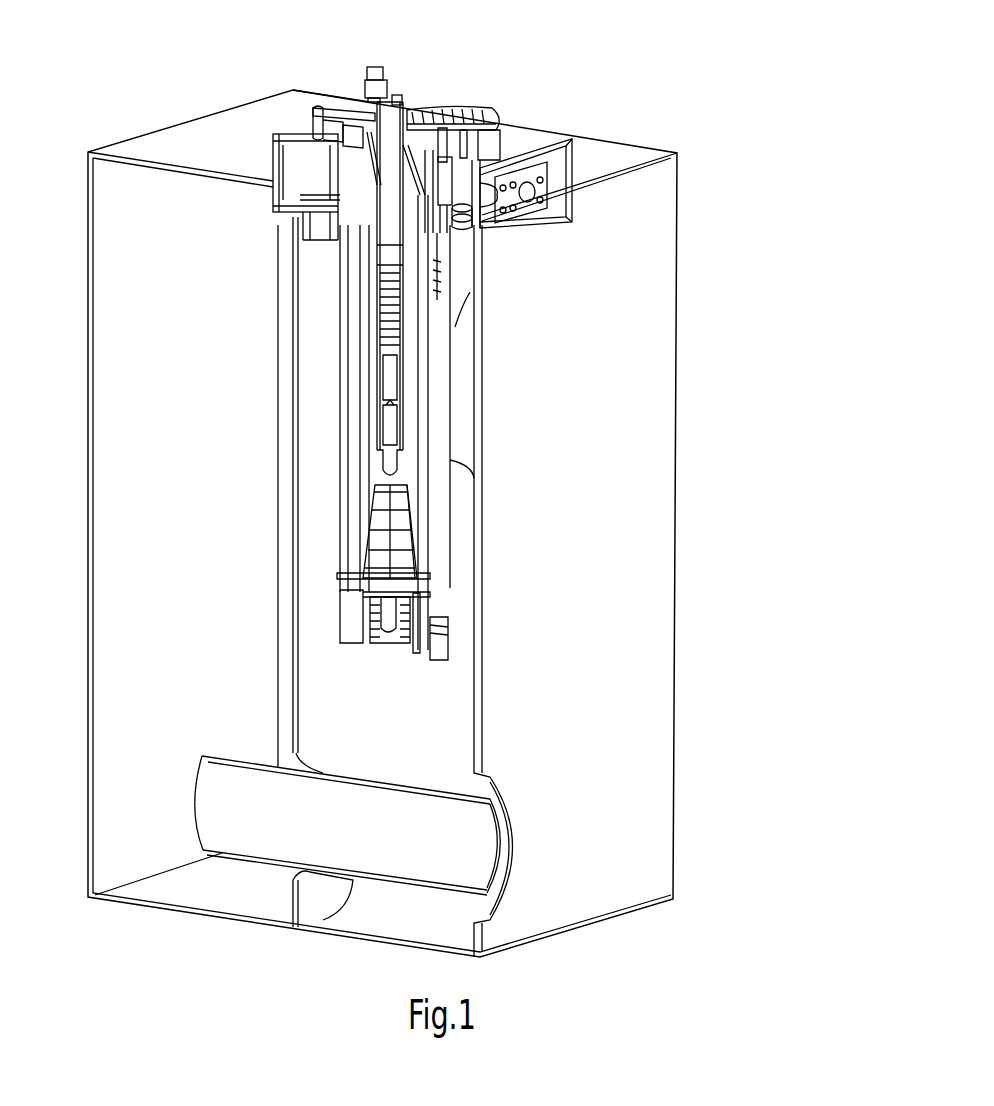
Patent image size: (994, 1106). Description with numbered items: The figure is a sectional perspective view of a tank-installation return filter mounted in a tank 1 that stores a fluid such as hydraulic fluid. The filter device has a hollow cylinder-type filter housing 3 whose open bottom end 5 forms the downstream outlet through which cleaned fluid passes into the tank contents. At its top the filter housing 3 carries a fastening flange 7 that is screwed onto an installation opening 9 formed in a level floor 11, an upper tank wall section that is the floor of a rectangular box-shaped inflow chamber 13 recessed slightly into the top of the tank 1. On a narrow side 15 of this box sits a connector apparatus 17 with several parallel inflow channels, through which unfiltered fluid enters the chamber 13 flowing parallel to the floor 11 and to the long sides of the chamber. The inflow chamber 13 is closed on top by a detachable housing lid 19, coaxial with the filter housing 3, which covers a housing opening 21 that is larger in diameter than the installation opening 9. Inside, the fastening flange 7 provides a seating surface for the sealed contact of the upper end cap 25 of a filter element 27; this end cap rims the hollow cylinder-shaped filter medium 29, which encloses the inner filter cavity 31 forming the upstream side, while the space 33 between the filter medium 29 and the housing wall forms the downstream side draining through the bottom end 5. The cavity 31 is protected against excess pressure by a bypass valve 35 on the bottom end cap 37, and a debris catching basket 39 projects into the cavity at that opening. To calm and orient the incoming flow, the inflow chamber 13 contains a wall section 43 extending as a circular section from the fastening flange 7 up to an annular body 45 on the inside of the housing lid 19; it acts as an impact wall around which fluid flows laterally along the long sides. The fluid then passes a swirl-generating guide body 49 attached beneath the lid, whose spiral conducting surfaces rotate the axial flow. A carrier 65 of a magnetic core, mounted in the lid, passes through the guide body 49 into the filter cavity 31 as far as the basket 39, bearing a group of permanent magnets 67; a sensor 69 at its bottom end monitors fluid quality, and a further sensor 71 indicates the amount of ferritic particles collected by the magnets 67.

The tank 1 is at (620, 490).
The filter housing 3 is at (455, 327).
The bottom end 5 is at (353, 640).
The fastening flange 7 is at (448, 185).
The installation opening 9 is at (352, 217).
The floor 11 is at (322, 203).
The inflow chamber 13 is at (343, 165).
The narrow side 15 is at (560, 142).
The connector apparatus 17 is at (540, 217).
The housing lid 19 is at (335, 122).
The housing opening 21 is at (327, 131).
The end cap 25 is at (435, 245).
The filter element 27 is at (433, 515).
The filter medium 29 is at (423, 450).
The filter cavity 31 is at (370, 430).
The space 33 is at (343, 593).
The bypass valve 35 is at (388, 632).
The bottom end cap 37 is at (338, 610).
The debris catching basket 39 is at (348, 575).
The wall section 43 is at (483, 160).
The annular body 45 is at (452, 110).
The guide body 49 is at (450, 108).
The carrier 65 is at (378, 247).
The permanent magnets 67 is at (385, 332).
The sensor 69 is at (383, 462).
The sensor 71 is at (380, 380).